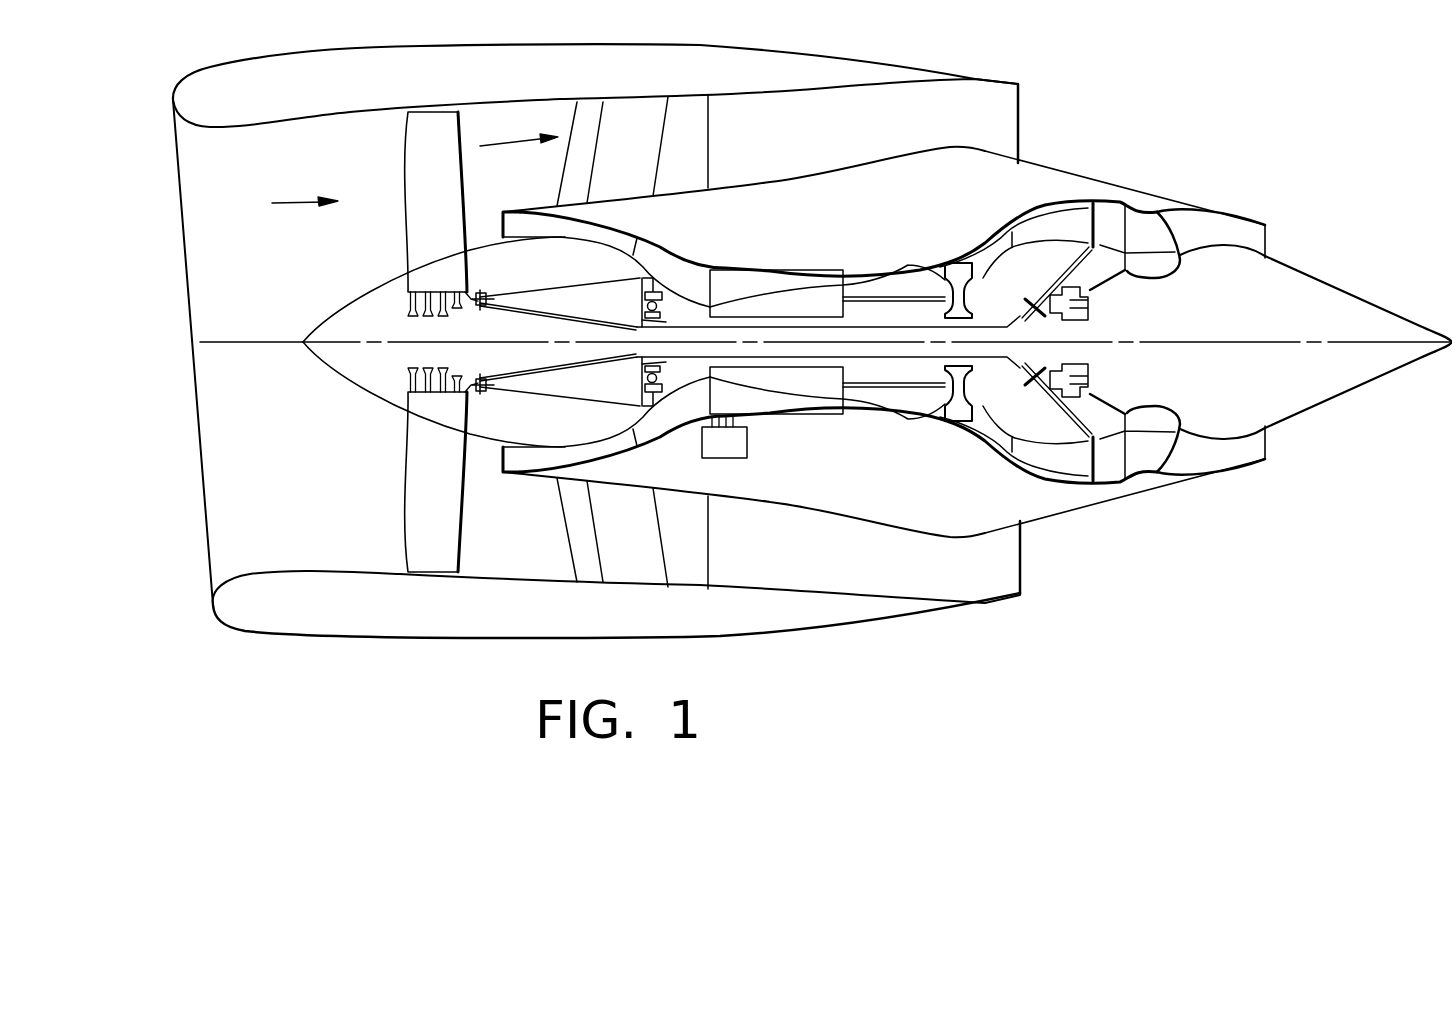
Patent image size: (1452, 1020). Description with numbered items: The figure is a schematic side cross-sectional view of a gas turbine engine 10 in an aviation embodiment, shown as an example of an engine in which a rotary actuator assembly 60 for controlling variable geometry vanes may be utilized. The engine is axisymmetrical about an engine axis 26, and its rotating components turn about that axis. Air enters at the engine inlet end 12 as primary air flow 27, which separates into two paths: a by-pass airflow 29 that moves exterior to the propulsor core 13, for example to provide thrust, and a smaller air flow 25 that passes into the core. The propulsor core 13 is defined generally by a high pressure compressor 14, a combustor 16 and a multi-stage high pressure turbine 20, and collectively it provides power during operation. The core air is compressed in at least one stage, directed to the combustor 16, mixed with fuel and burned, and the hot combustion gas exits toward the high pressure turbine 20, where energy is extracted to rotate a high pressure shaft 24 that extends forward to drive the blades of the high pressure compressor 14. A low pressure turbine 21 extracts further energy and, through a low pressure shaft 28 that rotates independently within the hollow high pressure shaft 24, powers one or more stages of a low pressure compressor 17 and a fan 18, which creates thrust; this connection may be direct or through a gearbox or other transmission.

The gas turbine engine 10 is at (1188, 84).
The engine inlet end 12 is at (240, 304).
The propulsor core 13 is at (710, 232).
The high pressure compressor 14 is at (725, 285).
The combustor 16 is at (911, 278).
The low pressure compressor 17 is at (553, 495).
The fan 18 is at (427, 158).
The high pressure turbine 20 is at (988, 247).
The low pressure turbine 21 is at (1063, 165).
The high pressure shaft 24 is at (932, 395).
The air flow 25 is at (500, 224).
The engine axis 26 is at (270, 345).
The primary air flow 27 is at (303, 203).
The low pressure shaft 28 is at (713, 355).
The by-pass airflow 29 is at (533, 139).
The rotary actuator assembly 60 is at (727, 478).